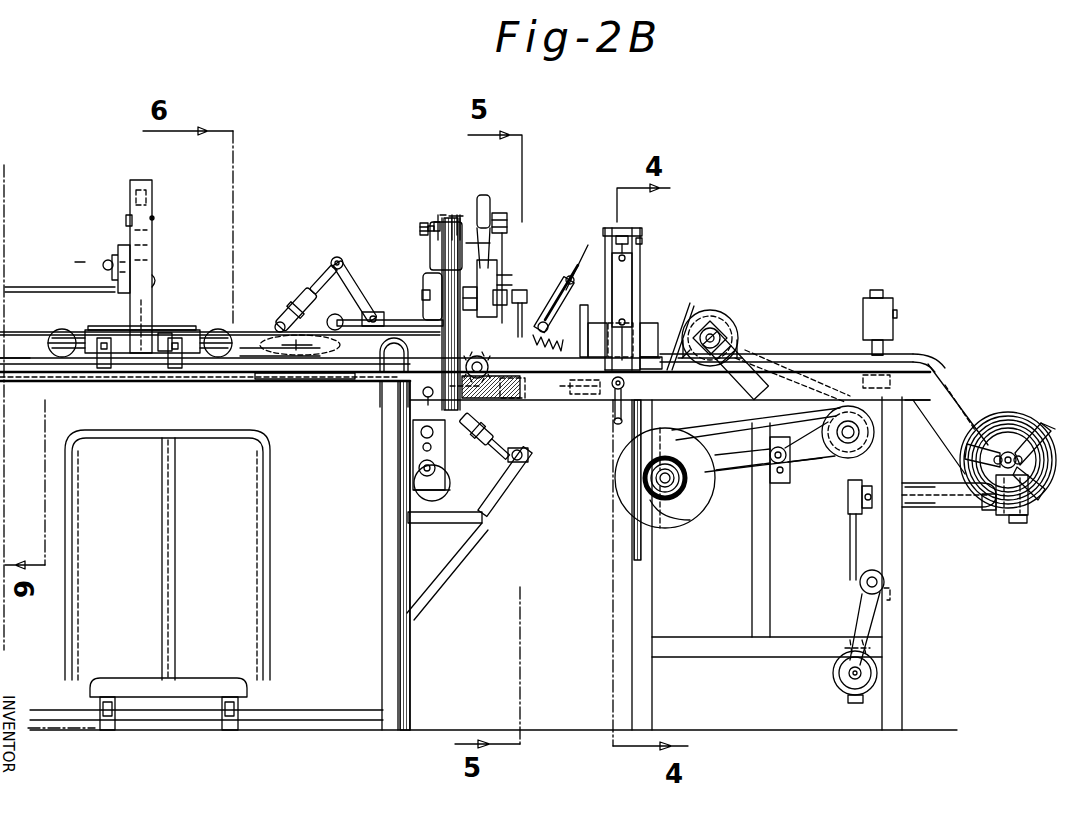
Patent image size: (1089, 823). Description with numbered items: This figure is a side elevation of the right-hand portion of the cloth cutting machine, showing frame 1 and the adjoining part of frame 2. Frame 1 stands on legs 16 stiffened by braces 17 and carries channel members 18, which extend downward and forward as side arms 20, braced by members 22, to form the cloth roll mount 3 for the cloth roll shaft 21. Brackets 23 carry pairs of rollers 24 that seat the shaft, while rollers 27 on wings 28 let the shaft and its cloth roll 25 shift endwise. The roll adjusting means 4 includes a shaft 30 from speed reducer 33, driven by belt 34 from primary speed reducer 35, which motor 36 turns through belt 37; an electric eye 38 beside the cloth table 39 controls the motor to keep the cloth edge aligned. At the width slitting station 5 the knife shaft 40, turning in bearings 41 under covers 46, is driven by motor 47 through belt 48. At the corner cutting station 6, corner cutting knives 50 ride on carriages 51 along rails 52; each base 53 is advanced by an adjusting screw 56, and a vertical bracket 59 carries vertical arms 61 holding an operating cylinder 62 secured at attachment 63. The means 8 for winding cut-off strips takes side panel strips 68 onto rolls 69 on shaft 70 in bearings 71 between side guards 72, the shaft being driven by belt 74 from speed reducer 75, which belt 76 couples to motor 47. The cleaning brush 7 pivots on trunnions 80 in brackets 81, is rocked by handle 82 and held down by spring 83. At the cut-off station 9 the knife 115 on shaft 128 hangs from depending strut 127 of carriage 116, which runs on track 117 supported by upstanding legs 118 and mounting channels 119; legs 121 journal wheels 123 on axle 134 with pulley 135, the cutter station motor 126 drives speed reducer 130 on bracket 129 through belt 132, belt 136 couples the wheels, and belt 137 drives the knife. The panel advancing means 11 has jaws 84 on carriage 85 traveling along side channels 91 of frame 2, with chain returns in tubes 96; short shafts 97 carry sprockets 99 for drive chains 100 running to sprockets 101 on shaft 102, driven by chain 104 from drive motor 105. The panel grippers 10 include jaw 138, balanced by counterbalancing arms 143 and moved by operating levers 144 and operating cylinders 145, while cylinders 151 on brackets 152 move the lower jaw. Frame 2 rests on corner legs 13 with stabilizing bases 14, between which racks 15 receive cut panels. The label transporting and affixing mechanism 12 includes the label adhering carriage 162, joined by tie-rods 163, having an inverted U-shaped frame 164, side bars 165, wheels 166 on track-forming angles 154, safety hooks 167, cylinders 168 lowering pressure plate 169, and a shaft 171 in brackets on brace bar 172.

The frame 1 is at (915, 615).
The frame 2 is at (423, 644).
The cloth roll mount 3 is at (970, 412).
The roll adjusting means 4 is at (909, 329).
The width slitting station 5 is at (752, 316).
The corner cutting station 6 is at (664, 275).
The cleaning brush 7 is at (586, 268).
The means for winding up cut-off strips of cloth 8 is at (713, 441).
The cut-off station 9 is at (522, 284).
The panel grippers 10 is at (404, 324).
The panel advancing means 11 is at (298, 376).
The label transporting and affixing mechanism 12 is at (84, 256).
The corner legs 13 is at (380, 654).
The stabilizing bases 14 is at (60, 732).
The racks 15 is at (190, 611).
The legs 16 is at (652, 690).
The braces 17 is at (708, 630).
The channel members 18 is at (812, 356).
The side arms 20 is at (498, 265).
The cloth roll shaft 21 is at (1014, 452).
The members 22 is at (932, 510).
The brackets 23 is at (1040, 436).
The rollers 24 is at (1060, 484).
The cloth roll 25 is at (1016, 412).
The rollers 27 is at (986, 510).
The wings 28 is at (998, 518).
The shaft 30 is at (928, 483).
The speed reducer 33 is at (848, 490).
The belt 34 is at (849, 537).
The primary speed reducer 35 is at (858, 594).
The motor 36 is at (855, 616).
The belt 37 is at (832, 677).
The electric eye 38 is at (888, 298).
The cloth table 39 is at (784, 352).
The knife shaft 40 is at (716, 313).
The bearings 41 is at (740, 340).
The covers 46 is at (708, 312).
The motor 47 is at (836, 462).
The belt 48 is at (800, 420).
The corner cutting knives 50 is at (640, 318).
The carriages 51 is at (584, 323).
The rails 52 is at (660, 384).
The base 53 is at (688, 310).
The adjusting screw 56 is at (612, 398).
The vertical bracket 59 is at (655, 340).
The vertical arms 61 is at (622, 228).
The operating cylinder 62 is at (632, 270).
The cylinder attachment 63 is at (641, 240).
The side panel strips 68 is at (655, 430).
The rolls 69 is at (700, 520).
The shaft 70 is at (655, 478).
The bearings 71 is at (670, 455).
The side guards 72 is at (625, 505).
The belt 74 is at (735, 470).
The speed reducer 75 is at (780, 485).
The belt 76 is at (790, 470).
The trunnions 80 is at (578, 312).
The brackets 81 is at (556, 330).
The handle 82 is at (575, 280).
The spring 83 is at (512, 400).
The jaws 84 is at (322, 378).
The carriage 85 is at (266, 376).
The side channels 91 is at (248, 330).
The tubes 96 is at (195, 372).
The short shafts 97 is at (466, 365).
The sprockets 99 is at (407, 352).
The drive chains 100 is at (445, 406).
The sprockets 101 is at (415, 445).
The shaft 102 is at (415, 430).
The chain 104 is at (418, 465).
The drive motor 105 is at (420, 480).
The knife 115 is at (522, 318).
The carriage 116 is at (420, 272).
The track 117 is at (455, 215).
The upstanding legs 118 is at (422, 295).
The mounting channels 119 is at (500, 445).
The upstanding legs 121 is at (430, 252).
The wheels 123 is at (442, 216).
The cutter station motor 126 is at (423, 286).
The depending strut 127 is at (472, 322).
The shaft 128 is at (492, 399).
The bracket 129 is at (508, 230).
The speed reducer 130 is at (494, 188).
The belt 132 is at (508, 240).
The axle 134 is at (420, 225).
The pulley 135 is at (430, 235).
The belt 136 is at (436, 221).
The belt 137 is at (510, 296).
The jaw 138 is at (348, 329).
The counterbalancing arms 143 is at (365, 312).
The operating levers 144 is at (335, 258).
The operating cylinders 145 is at (302, 298).
The cylinders 151 is at (522, 448).
The brackets 152 is at (498, 490).
The track-forming angles 154 is at (12, 384).
The label adhering carriage 162 is at (163, 262).
The tie-rods 163 is at (38, 286).
The inverted U-shaped frame 164 is at (150, 182).
The side bars 165 is at (162, 333).
The wheels 166 is at (60, 330).
The safety hooks 167 is at (174, 370).
The cylinders 168 is at (126, 220).
The pressure plate 169 is at (110, 330).
The shaft 171 is at (118, 252).
The brace bar 172 is at (130, 250).